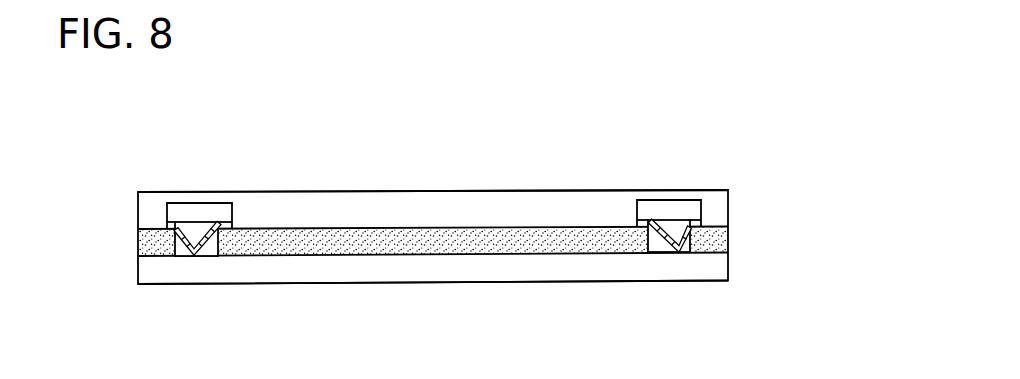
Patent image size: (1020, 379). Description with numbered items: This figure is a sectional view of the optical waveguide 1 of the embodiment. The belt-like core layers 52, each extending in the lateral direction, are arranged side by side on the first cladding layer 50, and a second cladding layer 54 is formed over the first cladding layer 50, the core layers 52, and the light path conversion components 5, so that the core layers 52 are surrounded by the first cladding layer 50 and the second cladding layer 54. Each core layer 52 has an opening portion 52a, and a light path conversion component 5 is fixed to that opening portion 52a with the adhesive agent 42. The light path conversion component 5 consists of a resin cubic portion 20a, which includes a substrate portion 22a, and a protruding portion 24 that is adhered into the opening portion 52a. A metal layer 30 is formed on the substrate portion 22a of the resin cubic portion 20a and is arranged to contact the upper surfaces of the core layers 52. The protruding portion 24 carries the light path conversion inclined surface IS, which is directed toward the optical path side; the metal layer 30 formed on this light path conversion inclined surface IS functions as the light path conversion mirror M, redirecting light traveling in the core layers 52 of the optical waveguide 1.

The optical waveguide 1 is at (403, 125).
The light path conversion component 5 is at (200, 201).
The light path conversion inclined surface IS is at (193, 233).
The metal layer 30 is at (226, 226).
The adhesive agent 42 is at (220, 224).
The core layer 52 is at (427, 237).
The opening portion 52a is at (220, 243).
The second cladding layer 54 is at (492, 205).
The first cladding layer 50 is at (445, 273).
The resin cubic portion 20a is at (68, 197).
The substrate portion 22a is at (180, 213).
The protruding portion 24 is at (193, 233).
The light path conversion mirror M is at (202, 247).